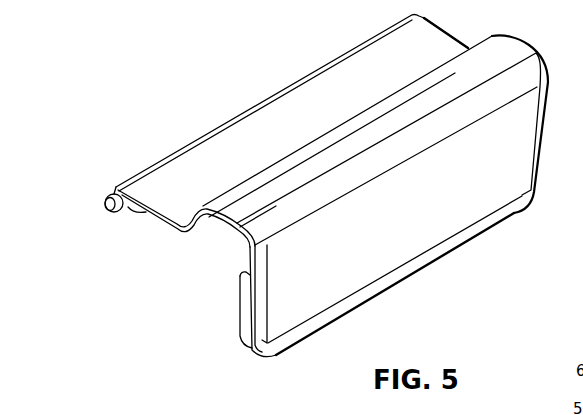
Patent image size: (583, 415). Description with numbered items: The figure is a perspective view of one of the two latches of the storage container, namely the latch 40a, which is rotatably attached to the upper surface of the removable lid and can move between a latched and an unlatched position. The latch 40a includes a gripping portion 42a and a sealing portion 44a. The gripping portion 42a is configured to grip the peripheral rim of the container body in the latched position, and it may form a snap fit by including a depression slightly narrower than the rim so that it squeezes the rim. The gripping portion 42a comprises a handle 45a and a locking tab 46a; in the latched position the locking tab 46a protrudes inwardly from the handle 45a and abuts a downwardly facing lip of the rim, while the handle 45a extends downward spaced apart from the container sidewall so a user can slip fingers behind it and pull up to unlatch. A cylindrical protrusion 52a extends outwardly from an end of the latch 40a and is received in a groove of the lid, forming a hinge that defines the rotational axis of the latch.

The latch 40a is at (227, 90).
The sealing portion 44a is at (343, 78).
The gripping portion 42a is at (533, 64).
The handle 45a is at (435, 230).
The locking tab 46a is at (248, 297).
The cylindrical protrusion 52a is at (116, 187).